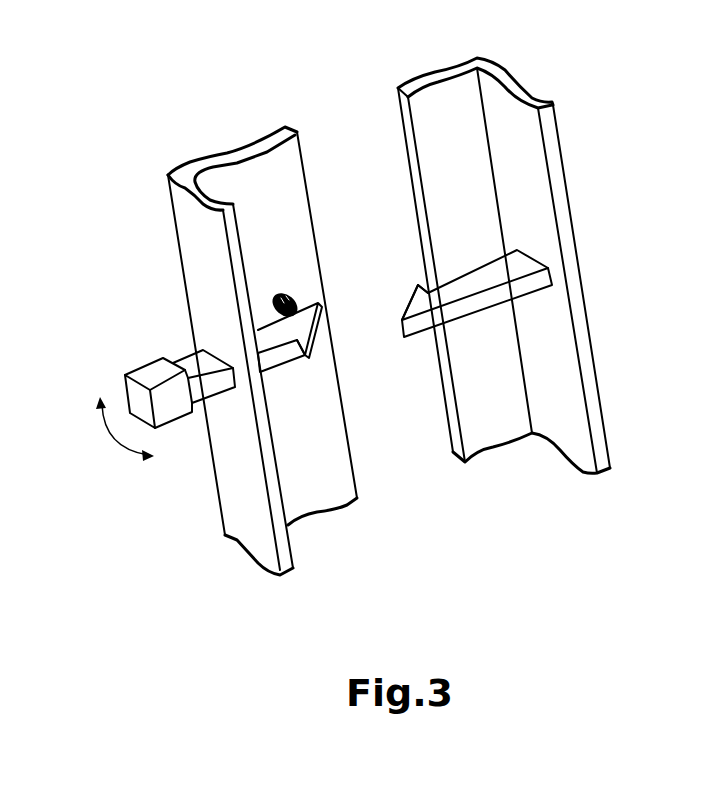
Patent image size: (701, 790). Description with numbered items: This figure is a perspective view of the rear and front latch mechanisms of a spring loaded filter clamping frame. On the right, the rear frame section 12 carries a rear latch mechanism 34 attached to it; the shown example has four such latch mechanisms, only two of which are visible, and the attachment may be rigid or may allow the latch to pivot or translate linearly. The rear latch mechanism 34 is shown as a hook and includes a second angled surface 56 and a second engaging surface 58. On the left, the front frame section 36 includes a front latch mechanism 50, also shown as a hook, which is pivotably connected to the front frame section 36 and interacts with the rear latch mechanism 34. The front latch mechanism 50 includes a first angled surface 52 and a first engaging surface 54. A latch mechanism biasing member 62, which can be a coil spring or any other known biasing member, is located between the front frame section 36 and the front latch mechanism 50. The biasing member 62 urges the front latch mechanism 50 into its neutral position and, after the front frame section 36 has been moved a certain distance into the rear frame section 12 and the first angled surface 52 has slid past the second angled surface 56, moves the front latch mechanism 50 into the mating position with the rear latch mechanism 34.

The rear frame section 12 is at (592, 407).
The rear latch mechanism 34 is at (525, 288).
The front frame section 36 is at (188, 237).
The front latch mechanism 50 is at (177, 423).
The first angled surface 52 is at (320, 337).
The first engaging surface 54 is at (303, 367).
The second angled surface 56 is at (396, 301).
The second engaging surface 58 is at (437, 272).
The latch mechanism biasing member 62 is at (287, 297).